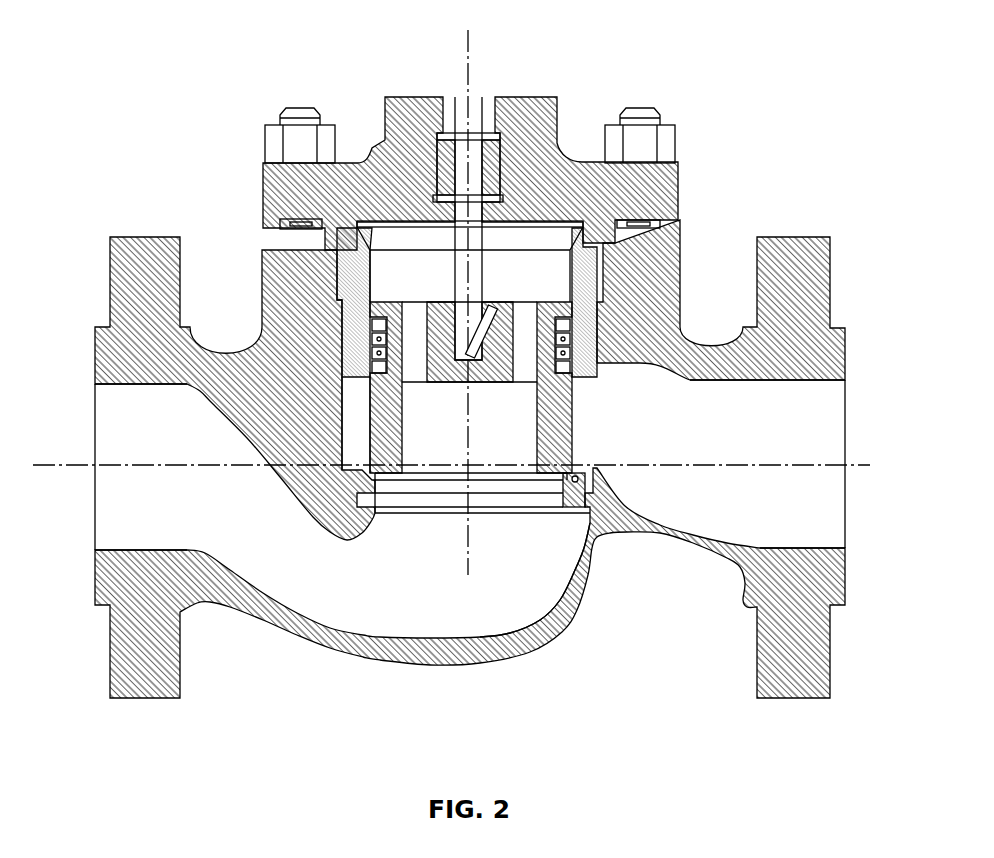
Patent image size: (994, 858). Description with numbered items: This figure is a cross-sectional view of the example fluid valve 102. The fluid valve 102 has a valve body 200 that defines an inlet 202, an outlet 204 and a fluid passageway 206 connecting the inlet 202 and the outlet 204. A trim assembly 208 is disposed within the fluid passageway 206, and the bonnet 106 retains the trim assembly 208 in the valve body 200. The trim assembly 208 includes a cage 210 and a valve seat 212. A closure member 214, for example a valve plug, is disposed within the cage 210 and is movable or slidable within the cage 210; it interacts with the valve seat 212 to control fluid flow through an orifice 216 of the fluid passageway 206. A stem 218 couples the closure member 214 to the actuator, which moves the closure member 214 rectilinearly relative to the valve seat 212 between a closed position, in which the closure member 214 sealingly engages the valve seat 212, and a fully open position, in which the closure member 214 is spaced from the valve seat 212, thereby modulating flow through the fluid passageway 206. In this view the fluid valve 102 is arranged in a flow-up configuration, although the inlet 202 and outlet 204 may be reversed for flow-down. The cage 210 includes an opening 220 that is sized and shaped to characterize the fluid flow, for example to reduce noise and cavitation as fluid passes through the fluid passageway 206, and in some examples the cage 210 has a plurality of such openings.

The fluid valve 102 is at (178, 150).
The bonnet 106 is at (393, 95).
The valve body 200 is at (481, 664).
The inlet 202 is at (95, 420).
The outlet 204 is at (847, 410).
The fluid passageway 206 is at (535, 580).
The trim assembly 208 is at (411, 265).
The cage 210 is at (357, 278).
The valve seat 212 is at (580, 472).
The closure member 214 is at (552, 395).
The orifice 216 is at (452, 505).
The stem 218 is at (467, 78).
The opening 220 is at (357, 400).